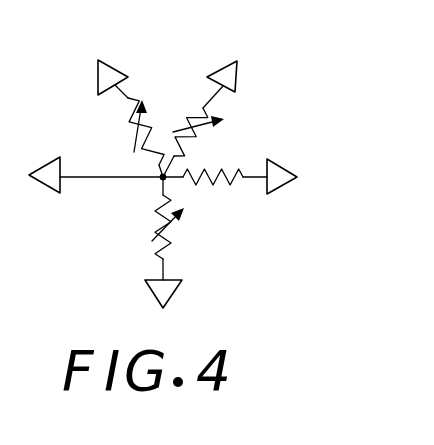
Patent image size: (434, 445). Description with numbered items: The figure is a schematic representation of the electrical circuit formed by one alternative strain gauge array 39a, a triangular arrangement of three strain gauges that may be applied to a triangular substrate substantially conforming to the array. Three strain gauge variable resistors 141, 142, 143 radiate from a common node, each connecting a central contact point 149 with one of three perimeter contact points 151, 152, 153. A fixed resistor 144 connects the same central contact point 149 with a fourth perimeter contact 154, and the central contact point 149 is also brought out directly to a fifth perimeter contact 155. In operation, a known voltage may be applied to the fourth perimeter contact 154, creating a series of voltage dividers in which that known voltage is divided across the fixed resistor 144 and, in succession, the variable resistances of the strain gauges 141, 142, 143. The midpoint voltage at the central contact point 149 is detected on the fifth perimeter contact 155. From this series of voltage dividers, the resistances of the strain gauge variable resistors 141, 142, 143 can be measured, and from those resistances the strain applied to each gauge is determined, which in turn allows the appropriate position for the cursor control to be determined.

The strain gauge array 39a is at (114, 244).
The strain gauge variable resistor 141 is at (138, 100).
The strain gauge variable resistor 142 is at (200, 108).
The strain gauge variable resistor 143 is at (171, 234).
The fixed resistor 144 is at (238, 176).
The central contact point 149 is at (159, 184).
The perimeter contact point 151 is at (97, 60).
The perimeter contact point 152 is at (224, 66).
The perimeter contact point 153 is at (172, 294).
The fourth perimeter contact 154 is at (287, 167).
The fifth perimeter contact 155 is at (53, 163).